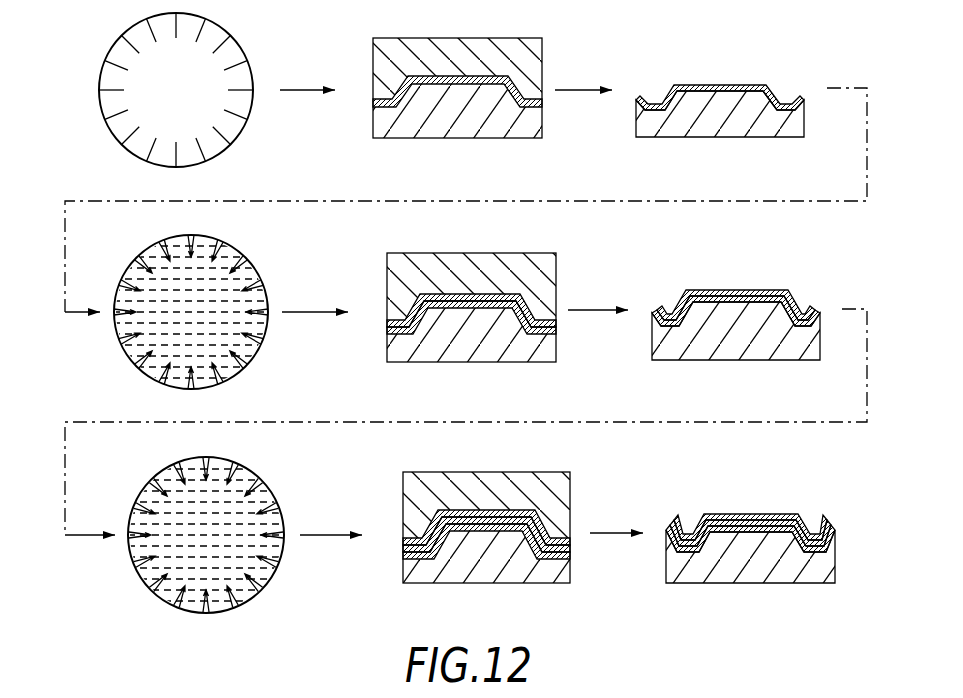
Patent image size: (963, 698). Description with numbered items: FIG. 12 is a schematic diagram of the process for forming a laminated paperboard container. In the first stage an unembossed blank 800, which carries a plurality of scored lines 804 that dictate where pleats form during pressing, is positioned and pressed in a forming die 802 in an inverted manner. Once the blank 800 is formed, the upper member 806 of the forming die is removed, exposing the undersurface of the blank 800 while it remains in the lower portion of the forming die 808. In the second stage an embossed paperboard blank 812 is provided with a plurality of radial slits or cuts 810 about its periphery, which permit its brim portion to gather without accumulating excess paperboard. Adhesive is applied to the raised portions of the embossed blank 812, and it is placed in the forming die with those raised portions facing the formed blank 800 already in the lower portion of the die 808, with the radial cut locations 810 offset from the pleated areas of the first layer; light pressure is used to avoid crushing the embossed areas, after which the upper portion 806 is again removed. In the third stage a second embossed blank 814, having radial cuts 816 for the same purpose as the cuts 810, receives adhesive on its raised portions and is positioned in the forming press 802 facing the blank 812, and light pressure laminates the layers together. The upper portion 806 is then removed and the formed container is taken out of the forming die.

The unembossed blank 800 is at (134, 32).
The forming die 802 is at (523, 44).
The scored lines 804 is at (108, 90).
The upper member of the forming die 806 is at (382, 47).
The lower portion of the forming die 808 is at (688, 136).
The radial slits or cuts 810 is at (140, 362).
The embossed paperboard blank 812 is at (230, 252).
The second embossed blank 814 is at (243, 476).
The radial cuts 816 is at (150, 583).